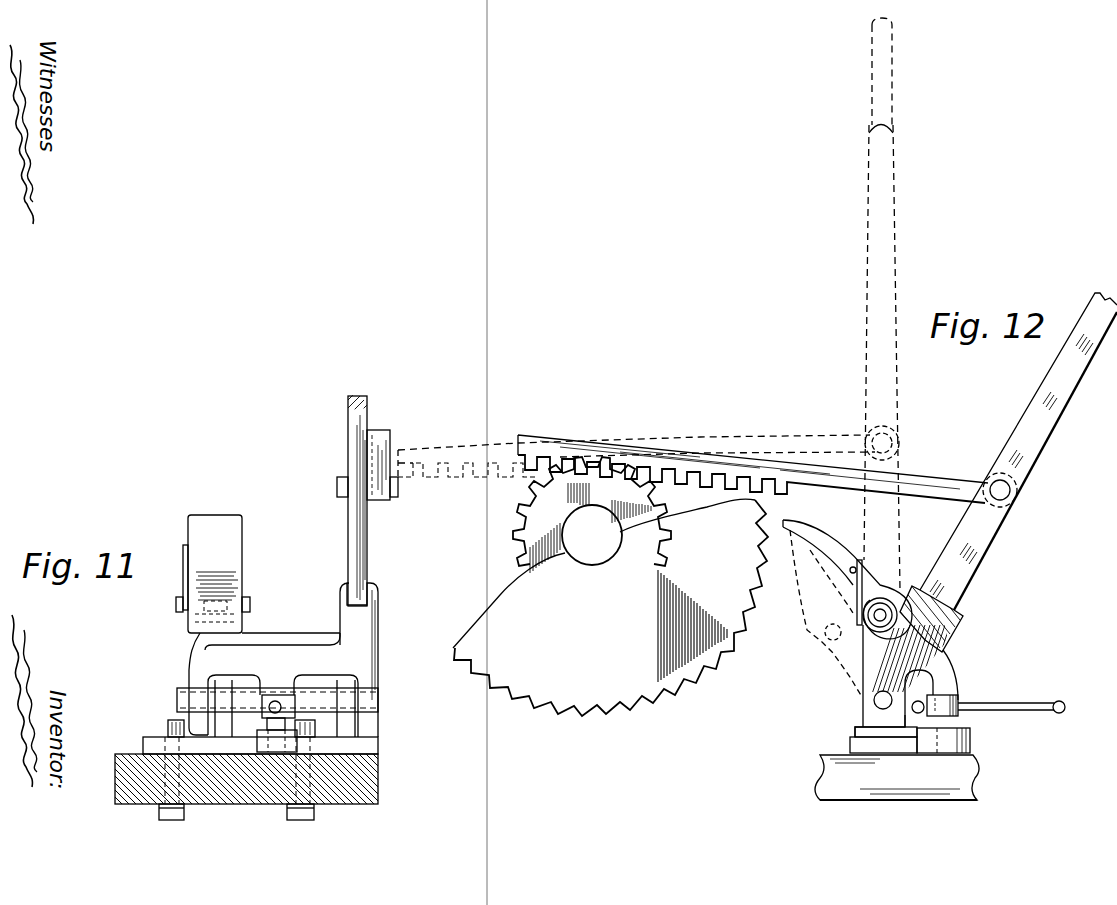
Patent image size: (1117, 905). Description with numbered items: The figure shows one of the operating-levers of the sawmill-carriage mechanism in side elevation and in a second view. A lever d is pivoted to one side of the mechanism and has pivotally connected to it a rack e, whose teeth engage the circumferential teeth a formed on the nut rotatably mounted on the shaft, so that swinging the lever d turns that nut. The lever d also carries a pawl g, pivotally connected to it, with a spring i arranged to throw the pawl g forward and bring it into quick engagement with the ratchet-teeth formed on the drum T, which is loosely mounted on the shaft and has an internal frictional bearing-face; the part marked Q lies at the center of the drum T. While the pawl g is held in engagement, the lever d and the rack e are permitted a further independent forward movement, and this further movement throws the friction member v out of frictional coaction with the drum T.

In FIG. 12, the circumferential teeth a is at (520, 508).
In FIG. 12, the pinion hub Q is at (592, 535).
In FIG. 12, the drum T is at (604, 590).
In FIG. 12, the friction face or member v is at (723, 660).
In FIG. 11, the rack e is at (390, 436).
In FIG. 12, the rack e is at (942, 478).
In FIG. 11, the pawl g is at (235, 538).
In FIG. 12, the pawl g is at (825, 533).
In FIG. 11, the spring i is at (183, 592).
In FIG. 12, the spring i is at (866, 576).
In FIG. 11, the lever d is at (367, 546).
In FIG. 12, the lever d is at (974, 568).